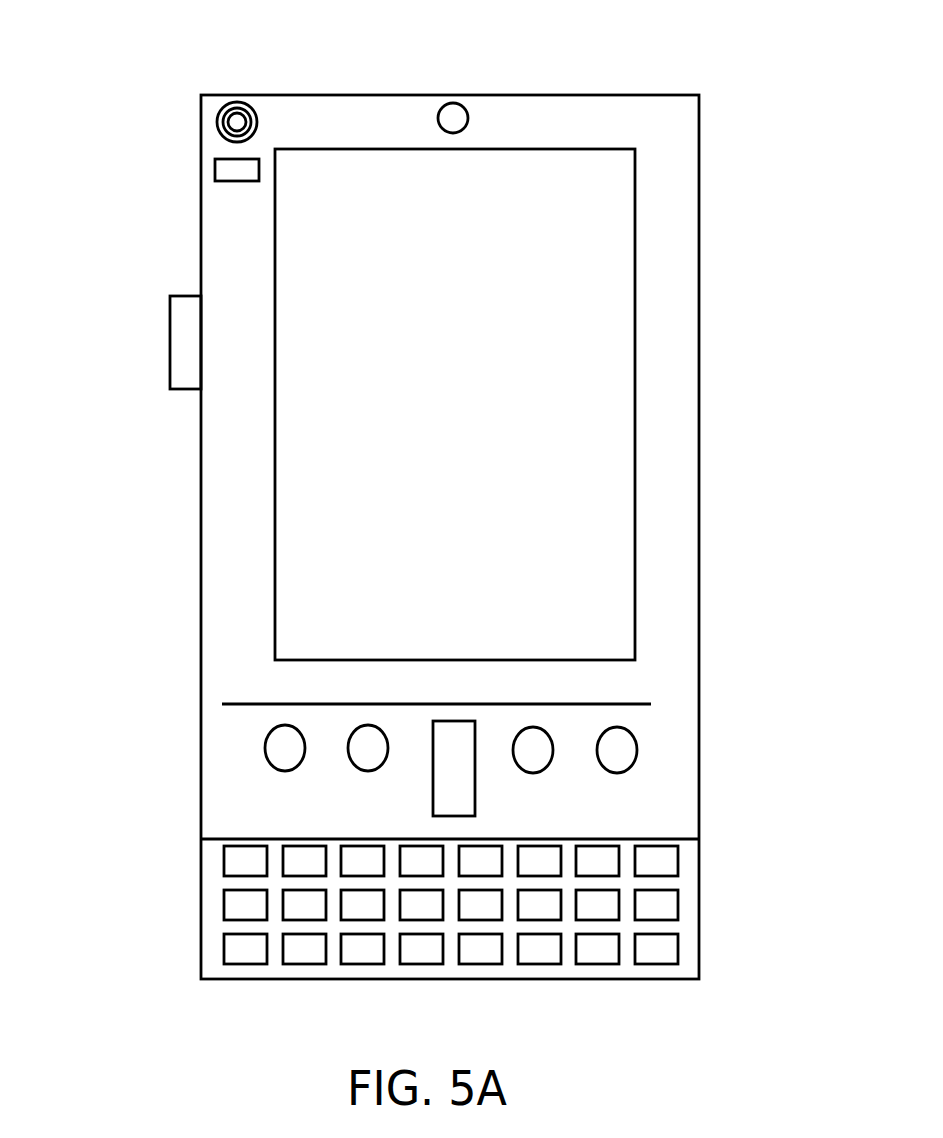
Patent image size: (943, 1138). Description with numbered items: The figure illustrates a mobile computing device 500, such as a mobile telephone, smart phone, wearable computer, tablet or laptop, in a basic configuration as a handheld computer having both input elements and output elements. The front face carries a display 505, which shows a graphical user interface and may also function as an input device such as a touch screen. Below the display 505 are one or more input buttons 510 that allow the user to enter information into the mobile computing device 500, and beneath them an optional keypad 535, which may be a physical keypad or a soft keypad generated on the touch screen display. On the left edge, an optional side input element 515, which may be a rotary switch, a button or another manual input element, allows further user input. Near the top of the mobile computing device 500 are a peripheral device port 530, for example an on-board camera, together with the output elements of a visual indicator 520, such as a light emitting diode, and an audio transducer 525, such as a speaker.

The mobile computing device 500 is at (685, 113).
The display 505 is at (385, 573).
The input buttons 510 is at (453, 775).
The side input element 515 is at (168, 342).
The visual indicator 520 is at (216, 176).
The audio transducer 525 is at (216, 122).
The peripheral device port 530 is at (465, 117).
The keypad 535 is at (210, 954).